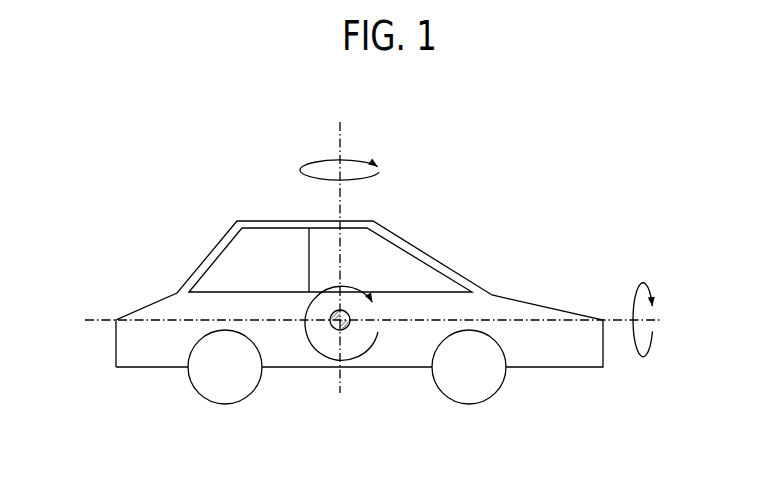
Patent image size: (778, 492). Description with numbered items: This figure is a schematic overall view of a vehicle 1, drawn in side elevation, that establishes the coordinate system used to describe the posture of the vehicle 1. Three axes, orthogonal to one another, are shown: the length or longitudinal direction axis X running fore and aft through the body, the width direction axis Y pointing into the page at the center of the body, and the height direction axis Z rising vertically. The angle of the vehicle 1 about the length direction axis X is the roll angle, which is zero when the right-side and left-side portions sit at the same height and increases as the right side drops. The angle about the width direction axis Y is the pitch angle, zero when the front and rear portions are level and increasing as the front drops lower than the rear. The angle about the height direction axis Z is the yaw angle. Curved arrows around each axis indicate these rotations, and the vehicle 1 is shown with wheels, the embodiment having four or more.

The vehicle 1 is at (550, 152).
The length direction axis X is at (85, 320).
The width direction axis Y is at (330, 338).
The height direction axis Z is at (340, 130).